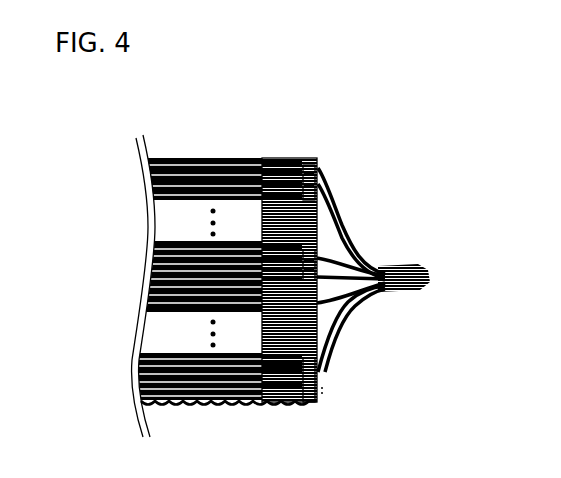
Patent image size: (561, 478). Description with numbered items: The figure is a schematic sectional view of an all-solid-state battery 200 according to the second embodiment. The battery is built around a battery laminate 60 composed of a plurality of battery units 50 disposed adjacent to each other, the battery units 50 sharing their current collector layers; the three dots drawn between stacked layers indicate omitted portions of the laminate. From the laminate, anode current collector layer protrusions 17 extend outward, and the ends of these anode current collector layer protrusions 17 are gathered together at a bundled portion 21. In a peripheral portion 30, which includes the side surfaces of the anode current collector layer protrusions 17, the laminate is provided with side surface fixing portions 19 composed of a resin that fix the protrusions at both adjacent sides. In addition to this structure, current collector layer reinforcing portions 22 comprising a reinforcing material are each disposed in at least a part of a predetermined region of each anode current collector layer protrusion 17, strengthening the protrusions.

The all-solid-state battery 200 is at (129, 191).
The battery laminate 60 is at (133, 334).
The peripheral portion 30 is at (325, 237).
The side surface fixing portion 19 is at (292, 158).
The current collector layer reinforcing portion 22 is at (317, 185).
The anode current collector layer protrusion 17 is at (348, 235).
The bundled portion 21 is at (418, 285).
The battery unit 50 is at (202, 403).